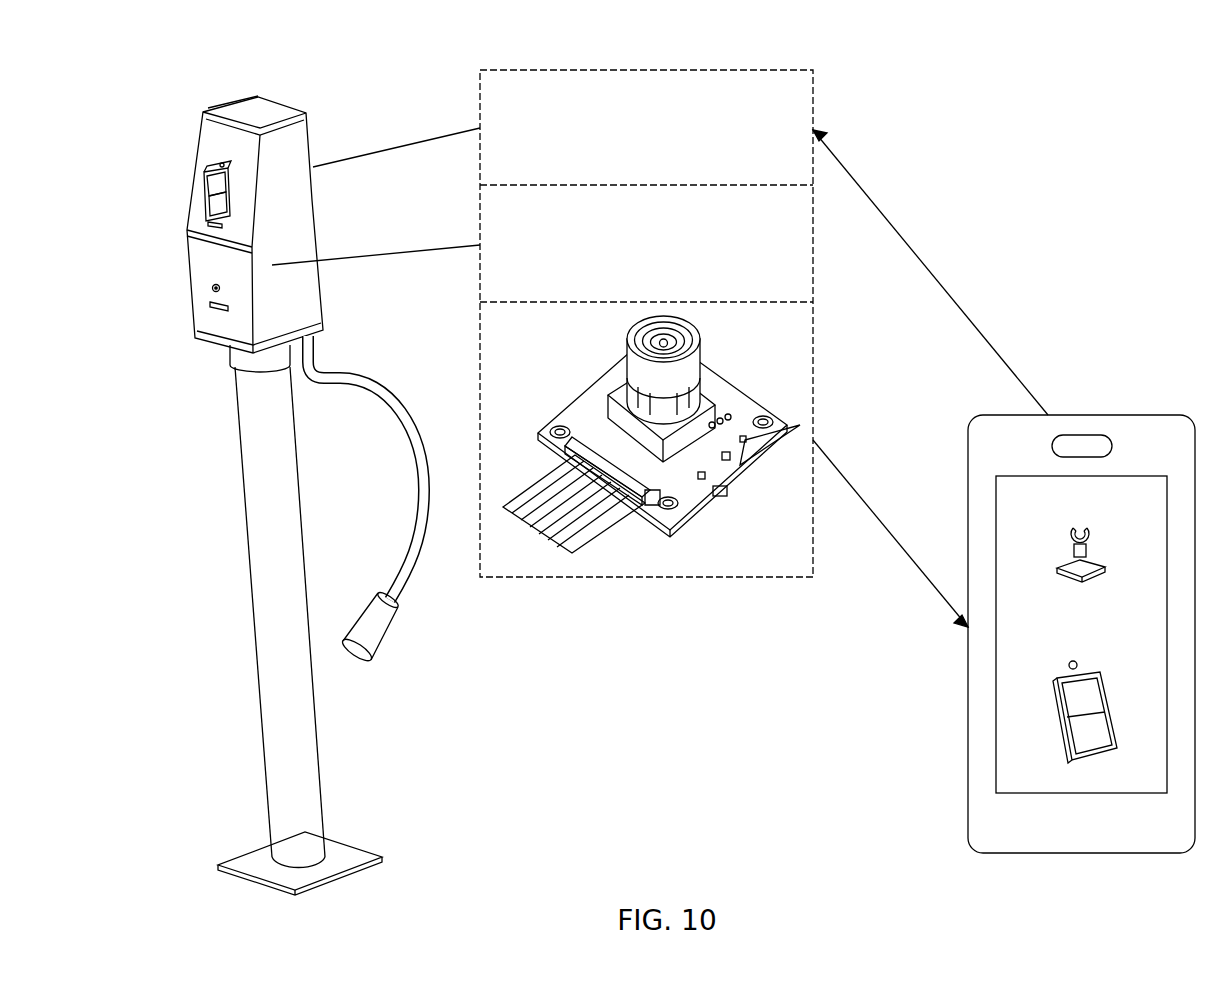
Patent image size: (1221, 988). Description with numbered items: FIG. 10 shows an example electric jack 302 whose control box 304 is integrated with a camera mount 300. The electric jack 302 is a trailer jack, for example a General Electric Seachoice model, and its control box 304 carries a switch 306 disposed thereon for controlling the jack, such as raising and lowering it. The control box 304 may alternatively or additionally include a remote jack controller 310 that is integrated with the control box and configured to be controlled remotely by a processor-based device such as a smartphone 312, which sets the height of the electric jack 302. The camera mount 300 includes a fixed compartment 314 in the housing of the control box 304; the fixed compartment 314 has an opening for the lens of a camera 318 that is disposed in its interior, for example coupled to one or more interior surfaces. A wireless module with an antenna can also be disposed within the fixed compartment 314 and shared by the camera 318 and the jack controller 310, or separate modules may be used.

The camera mount 300 is at (170, 266).
The electric jack 302 is at (252, 695).
The control box 304 is at (217, 127).
The switch 306 is at (205, 160).
The remote jack controller 310 is at (647, 70).
The smartphone 312 is at (1085, 855).
The fixed compartment 314 is at (203, 290).
The camera 318 is at (643, 577).